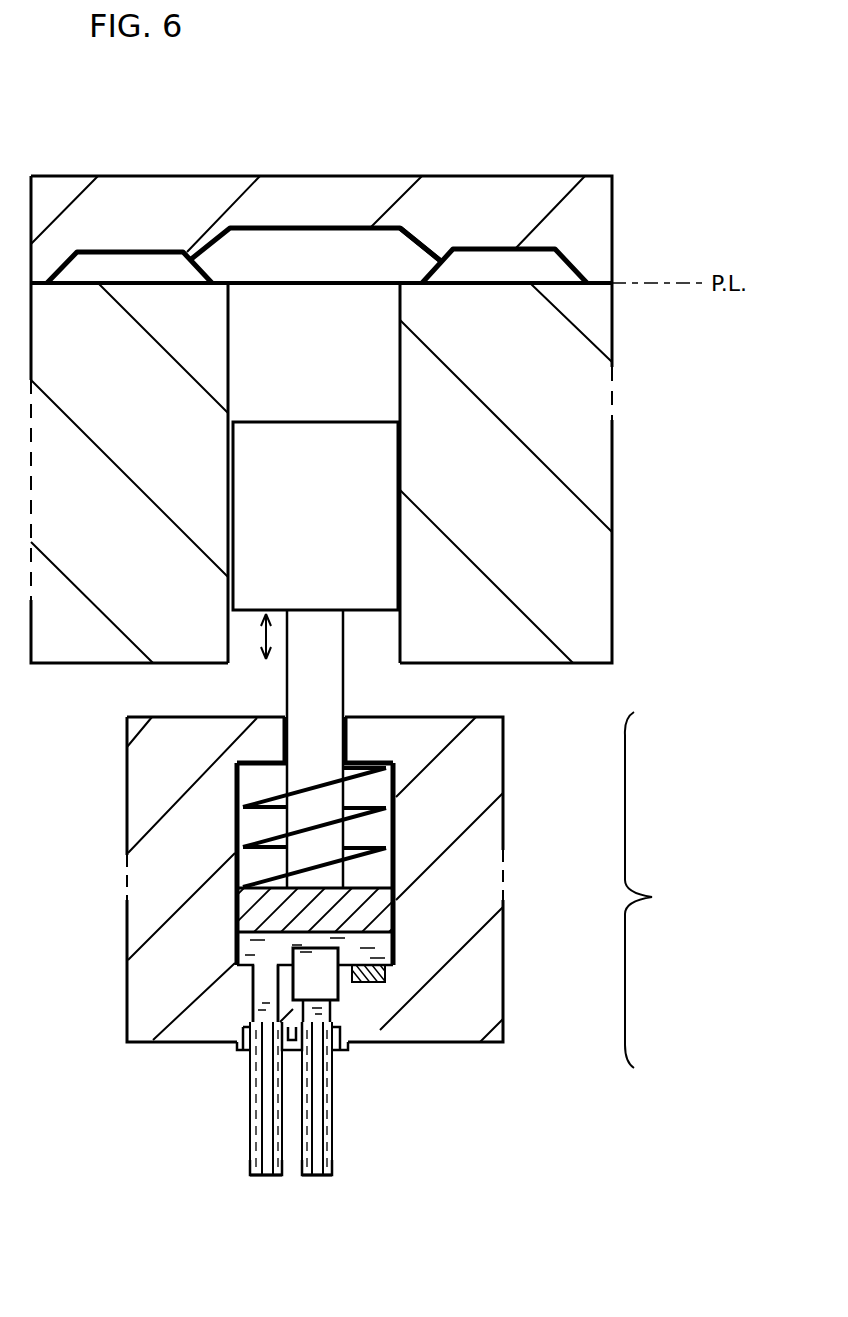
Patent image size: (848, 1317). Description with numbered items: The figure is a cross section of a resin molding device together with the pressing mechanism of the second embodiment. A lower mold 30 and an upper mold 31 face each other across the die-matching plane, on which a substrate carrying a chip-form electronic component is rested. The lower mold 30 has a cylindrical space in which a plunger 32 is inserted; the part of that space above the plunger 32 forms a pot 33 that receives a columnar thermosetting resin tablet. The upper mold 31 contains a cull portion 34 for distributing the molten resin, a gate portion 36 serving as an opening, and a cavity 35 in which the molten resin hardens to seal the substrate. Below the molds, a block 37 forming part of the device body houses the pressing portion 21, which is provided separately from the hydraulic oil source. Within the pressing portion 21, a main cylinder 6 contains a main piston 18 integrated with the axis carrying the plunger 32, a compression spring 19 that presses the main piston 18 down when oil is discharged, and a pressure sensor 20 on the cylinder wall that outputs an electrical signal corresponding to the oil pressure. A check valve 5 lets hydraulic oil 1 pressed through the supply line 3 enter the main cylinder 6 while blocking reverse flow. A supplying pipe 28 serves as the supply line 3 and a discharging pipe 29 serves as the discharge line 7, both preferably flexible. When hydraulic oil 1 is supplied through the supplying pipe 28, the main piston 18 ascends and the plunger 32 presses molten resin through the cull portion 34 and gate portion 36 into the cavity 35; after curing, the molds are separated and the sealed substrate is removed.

The upper mold 31 is at (600, 238).
The lower mold 30 is at (600, 330).
The plunger 32 is at (305, 446).
The pot 33 is at (231, 335).
The cull portion 34 is at (306, 262).
The cavity 35 is at (530, 268).
The gate portion 36 is at (420, 266).
The block 37 is at (127, 770).
The main piston 18 is at (397, 890).
The compression spring 19 is at (368, 808).
The main cylinder 6 is at (397, 932).
The pressure sensor 20 is at (388, 975).
The pressing portion 21 is at (665, 890).
The check valve 5 is at (328, 996).
The hydraulic oil 1 is at (262, 988).
The discharge line 7 is at (250, 1108).
The supply line 3 is at (322, 1108).
The discharging pipe 29 is at (262, 1172).
The supplying pipe 28 is at (322, 1172).